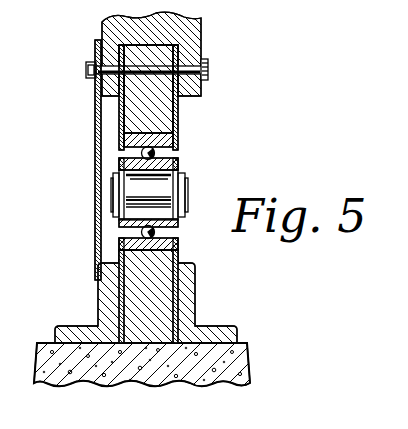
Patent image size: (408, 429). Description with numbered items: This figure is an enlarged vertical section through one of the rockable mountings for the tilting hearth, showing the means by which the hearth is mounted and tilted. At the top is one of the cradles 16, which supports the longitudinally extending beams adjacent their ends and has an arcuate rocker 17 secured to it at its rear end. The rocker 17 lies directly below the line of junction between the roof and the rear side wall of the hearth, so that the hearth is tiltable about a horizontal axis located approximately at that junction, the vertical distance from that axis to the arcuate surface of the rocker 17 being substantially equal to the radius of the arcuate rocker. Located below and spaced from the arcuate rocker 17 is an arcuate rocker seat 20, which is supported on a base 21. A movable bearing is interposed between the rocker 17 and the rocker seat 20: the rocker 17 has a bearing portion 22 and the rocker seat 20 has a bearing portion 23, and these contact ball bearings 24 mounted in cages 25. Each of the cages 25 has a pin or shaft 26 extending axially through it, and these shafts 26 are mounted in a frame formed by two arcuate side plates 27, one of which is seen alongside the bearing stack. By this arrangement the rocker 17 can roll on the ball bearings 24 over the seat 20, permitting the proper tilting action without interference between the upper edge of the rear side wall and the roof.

The cradle 16 is at (200, 38).
The arcuate rocker 17 is at (167, 107).
The arcuate rocker seat 20 is at (162, 277).
The base 21 is at (167, 357).
The bearing portion 22 is at (175, 138).
The bearing portion 23 is at (176, 242).
The ball bearings 24 is at (155, 152).
The cage 25 is at (180, 162).
The pin or shaft 26 is at (185, 193).
The arcuate side plates 27 is at (121, 157).